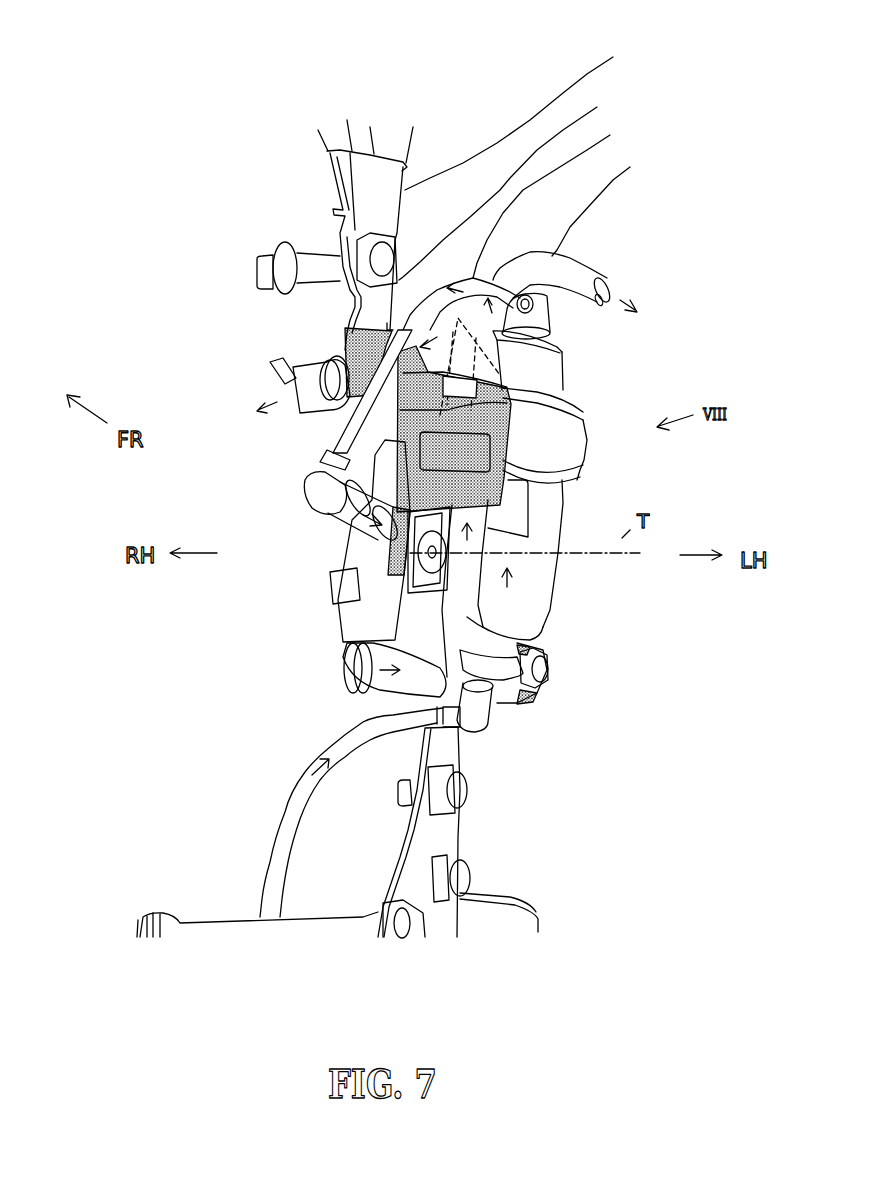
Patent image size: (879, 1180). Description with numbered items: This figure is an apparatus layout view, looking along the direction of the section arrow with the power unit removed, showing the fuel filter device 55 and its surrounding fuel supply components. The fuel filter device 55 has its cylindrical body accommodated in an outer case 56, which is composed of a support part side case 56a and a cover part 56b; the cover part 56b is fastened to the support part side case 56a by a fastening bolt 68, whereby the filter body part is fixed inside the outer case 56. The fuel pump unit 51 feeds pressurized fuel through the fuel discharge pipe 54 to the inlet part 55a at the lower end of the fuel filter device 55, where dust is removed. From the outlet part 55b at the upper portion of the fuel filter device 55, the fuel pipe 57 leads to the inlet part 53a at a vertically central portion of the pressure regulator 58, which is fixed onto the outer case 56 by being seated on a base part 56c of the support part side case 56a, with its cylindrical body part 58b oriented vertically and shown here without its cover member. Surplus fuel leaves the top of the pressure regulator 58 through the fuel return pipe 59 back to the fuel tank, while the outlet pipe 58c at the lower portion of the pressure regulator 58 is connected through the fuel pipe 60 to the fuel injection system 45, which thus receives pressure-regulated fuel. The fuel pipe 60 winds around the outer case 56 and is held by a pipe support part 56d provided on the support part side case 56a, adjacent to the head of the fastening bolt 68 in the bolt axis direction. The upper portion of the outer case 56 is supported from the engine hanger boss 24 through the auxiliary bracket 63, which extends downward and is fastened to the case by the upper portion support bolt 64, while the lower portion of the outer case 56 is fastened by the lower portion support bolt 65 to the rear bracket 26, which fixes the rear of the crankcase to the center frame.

The engine hanger boss 24 is at (613, 57).
The auxiliary bracket 63 is at (597, 107).
The fuel pipe 57 is at (610, 135).
The fuel return pipe 59 is at (630, 167).
The outlet part 55b is at (582, 267).
The upper portion support bolt 64 is at (550, 353).
The fuel filter device 55 is at (597, 504).
The pipe support part 56d is at (553, 397).
The outer case 56 is at (552, 498).
The cover part 56b is at (505, 597).
The support part side case 56a is at (533, 640).
The fastening bolt 68 is at (480, 592).
The lower portion support bolt 65 is at (540, 675).
The inlet part 55a is at (487, 733).
The fuel pipe 60 is at (352, 392).
The fuel injection system 45 is at (224, 416).
The inlet part 53a is at (353, 547).
The pressure regulator 58 is at (342, 562).
The cylindrical body part 58b is at (373, 570).
The base part 56c is at (353, 643).
The outlet pipe 58c is at (350, 683).
The fuel discharge pipe 54 is at (283, 820).
The rear bracket 26 is at (463, 833).
The fuel pump unit 51 is at (538, 930).